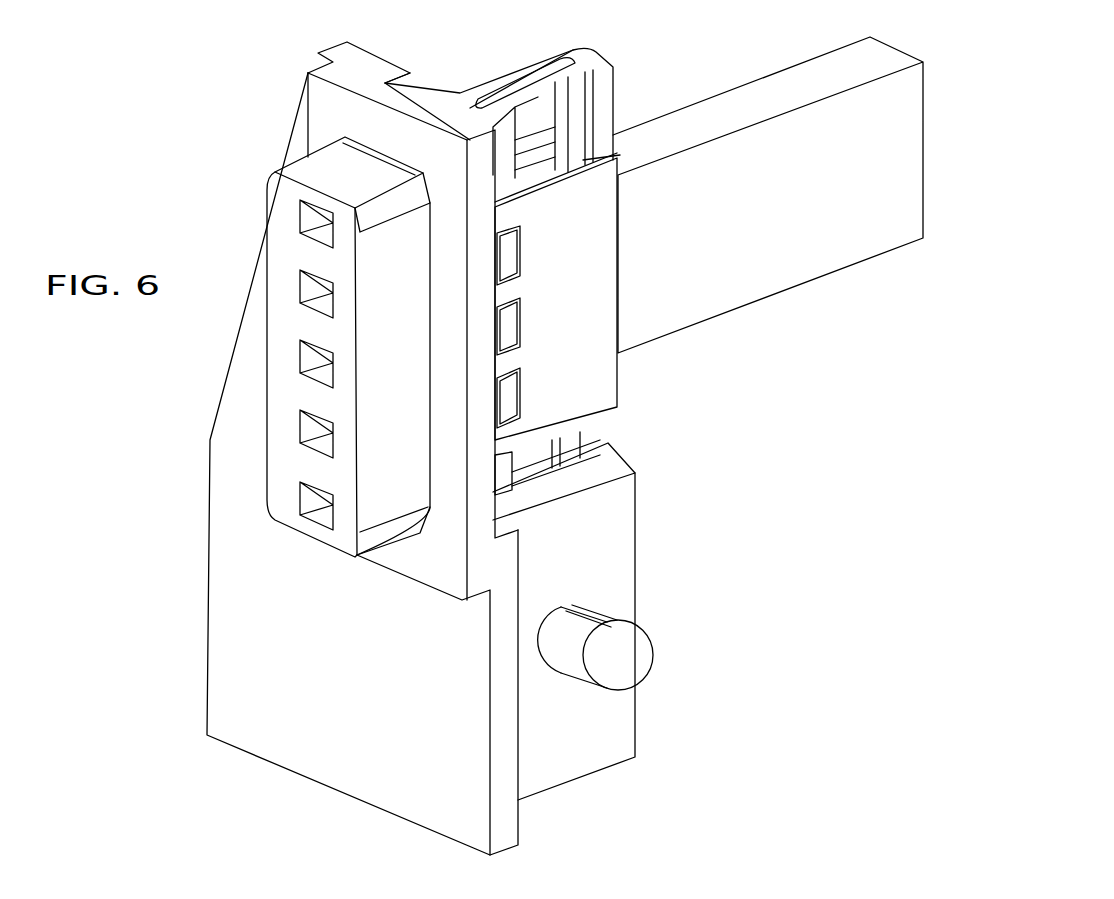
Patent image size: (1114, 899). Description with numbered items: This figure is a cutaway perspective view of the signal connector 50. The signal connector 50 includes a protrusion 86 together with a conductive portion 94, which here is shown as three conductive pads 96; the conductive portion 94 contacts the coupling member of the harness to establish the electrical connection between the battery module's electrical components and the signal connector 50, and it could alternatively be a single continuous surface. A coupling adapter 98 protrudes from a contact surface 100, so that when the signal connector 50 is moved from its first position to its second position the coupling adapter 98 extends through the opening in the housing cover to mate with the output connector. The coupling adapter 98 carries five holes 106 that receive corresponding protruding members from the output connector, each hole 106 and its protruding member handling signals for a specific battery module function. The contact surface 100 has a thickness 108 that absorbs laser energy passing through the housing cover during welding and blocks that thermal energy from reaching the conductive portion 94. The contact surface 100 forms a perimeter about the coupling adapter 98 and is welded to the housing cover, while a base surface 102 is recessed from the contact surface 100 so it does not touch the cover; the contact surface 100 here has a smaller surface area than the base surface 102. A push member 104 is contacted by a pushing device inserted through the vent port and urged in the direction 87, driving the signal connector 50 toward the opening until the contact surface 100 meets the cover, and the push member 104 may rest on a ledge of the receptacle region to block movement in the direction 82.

The signal connector 50 is at (652, 38).
The direction 82 is at (1027, 98).
The protrusion 86 is at (620, 656).
The direction 87 is at (978, 289).
The conductive portion 94 is at (585, 313).
The conductive pads 96 is at (507, 252).
The coupling adapter 98 is at (307, 327).
The contact surface 100 is at (390, 108).
The base surface 102 is at (368, 710).
The push member 104 is at (905, 118).
The holes 106 is at (308, 285).
The thickness 108 is at (460, 82).